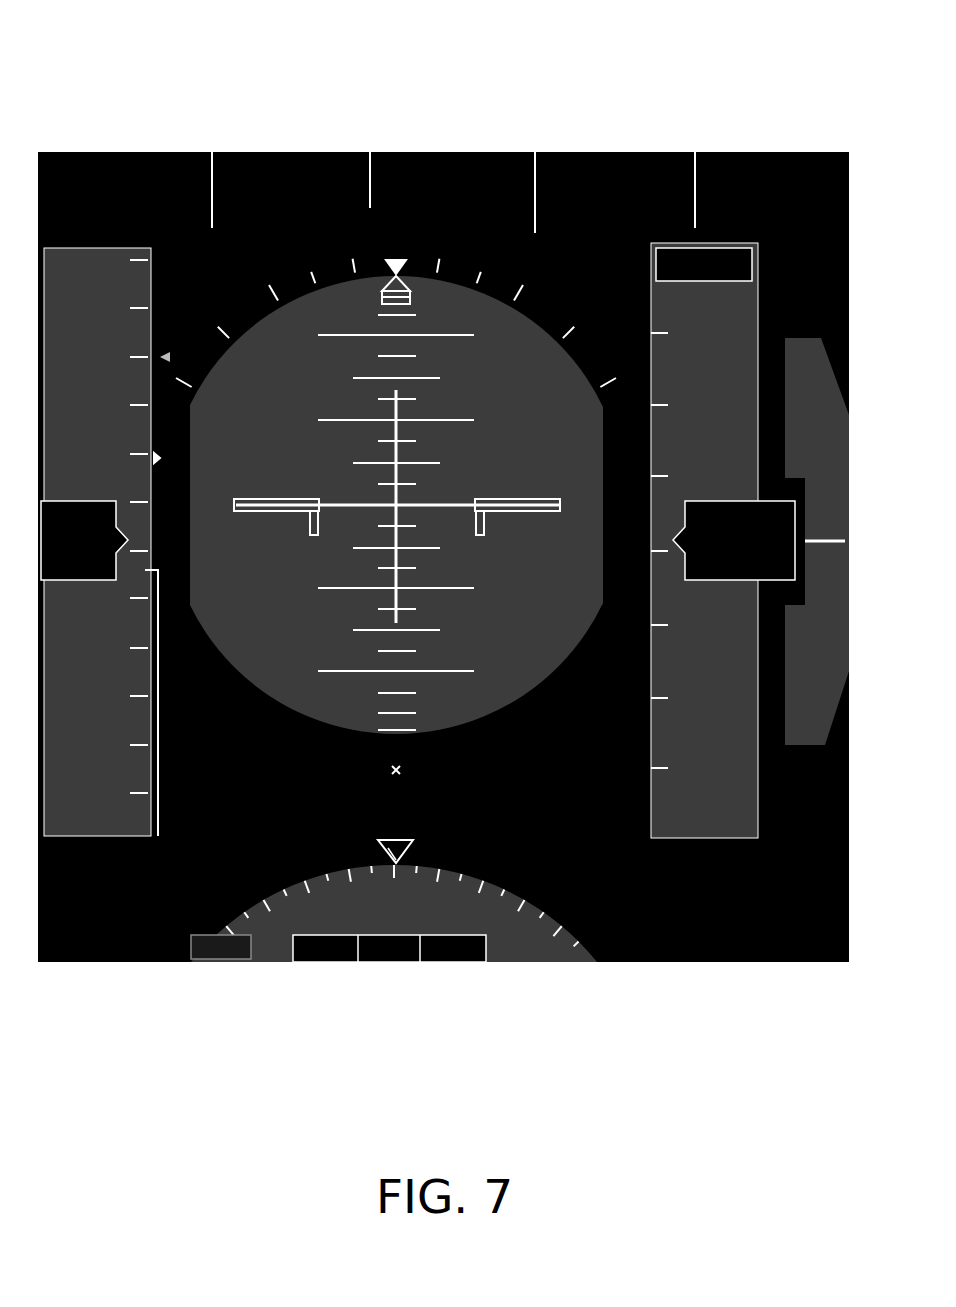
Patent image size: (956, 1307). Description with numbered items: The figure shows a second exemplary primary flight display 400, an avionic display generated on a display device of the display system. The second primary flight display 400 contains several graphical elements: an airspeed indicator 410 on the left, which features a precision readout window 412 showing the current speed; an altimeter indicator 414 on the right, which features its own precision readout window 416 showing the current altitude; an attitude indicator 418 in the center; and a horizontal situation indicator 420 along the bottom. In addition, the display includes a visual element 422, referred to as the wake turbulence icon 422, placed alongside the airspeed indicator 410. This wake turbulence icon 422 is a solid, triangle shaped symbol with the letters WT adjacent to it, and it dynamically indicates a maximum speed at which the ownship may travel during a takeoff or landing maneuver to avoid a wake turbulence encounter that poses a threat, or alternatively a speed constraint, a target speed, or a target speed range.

The second primary flight display 400 is at (176, 92).
The airspeed indicator 410 is at (142, 283).
The precision readout window 412 is at (47, 577).
The altimeter indicator 414 is at (643, 297).
The precision readout window 416 is at (690, 573).
The attitude indicator 418 is at (445, 272).
The horizontal situation indicator 420 is at (482, 883).
The wake turbulence icon 422 is at (163, 340).